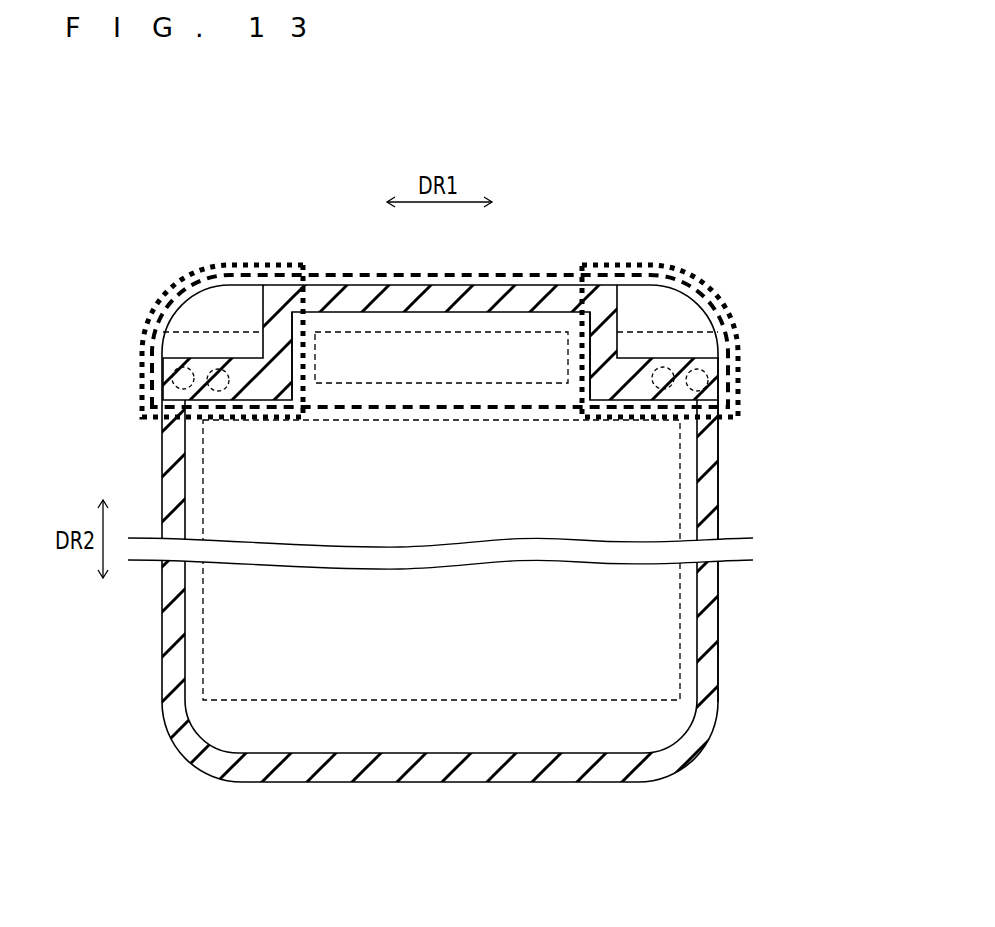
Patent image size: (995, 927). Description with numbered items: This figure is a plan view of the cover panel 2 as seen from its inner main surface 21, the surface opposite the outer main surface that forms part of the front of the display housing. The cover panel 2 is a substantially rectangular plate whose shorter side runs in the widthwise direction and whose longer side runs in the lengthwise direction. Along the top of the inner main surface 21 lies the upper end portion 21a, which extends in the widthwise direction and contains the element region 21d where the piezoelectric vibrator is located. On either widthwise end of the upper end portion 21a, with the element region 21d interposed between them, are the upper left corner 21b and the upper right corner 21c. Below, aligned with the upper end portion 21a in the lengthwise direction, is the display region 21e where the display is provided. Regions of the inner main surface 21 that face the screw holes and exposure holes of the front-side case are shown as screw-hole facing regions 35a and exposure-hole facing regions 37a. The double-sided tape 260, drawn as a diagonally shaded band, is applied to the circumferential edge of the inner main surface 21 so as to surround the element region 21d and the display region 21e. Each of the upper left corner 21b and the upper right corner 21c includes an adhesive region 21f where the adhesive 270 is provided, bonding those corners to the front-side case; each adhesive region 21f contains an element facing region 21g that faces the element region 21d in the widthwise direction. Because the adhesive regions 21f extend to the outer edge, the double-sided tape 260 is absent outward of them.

The cover panel 2 is at (451, 506).
The inner main surface 21 is at (405, 737).
The upper end portion 21a is at (523, 272).
The upper left corner 21b is at (200, 268).
The upper right corner 21c is at (723, 317).
The element region 21d is at (443, 330).
The display region 21e is at (680, 665).
The adhesive region 21f is at (192, 322).
The element facing region 21g is at (242, 347).
The screw-hole facing region 35a is at (160, 365).
The exposure-hole facing region 37a is at (150, 378).
The double-sided tape 260 is at (710, 704).
The adhesive 270 is at (250, 295).